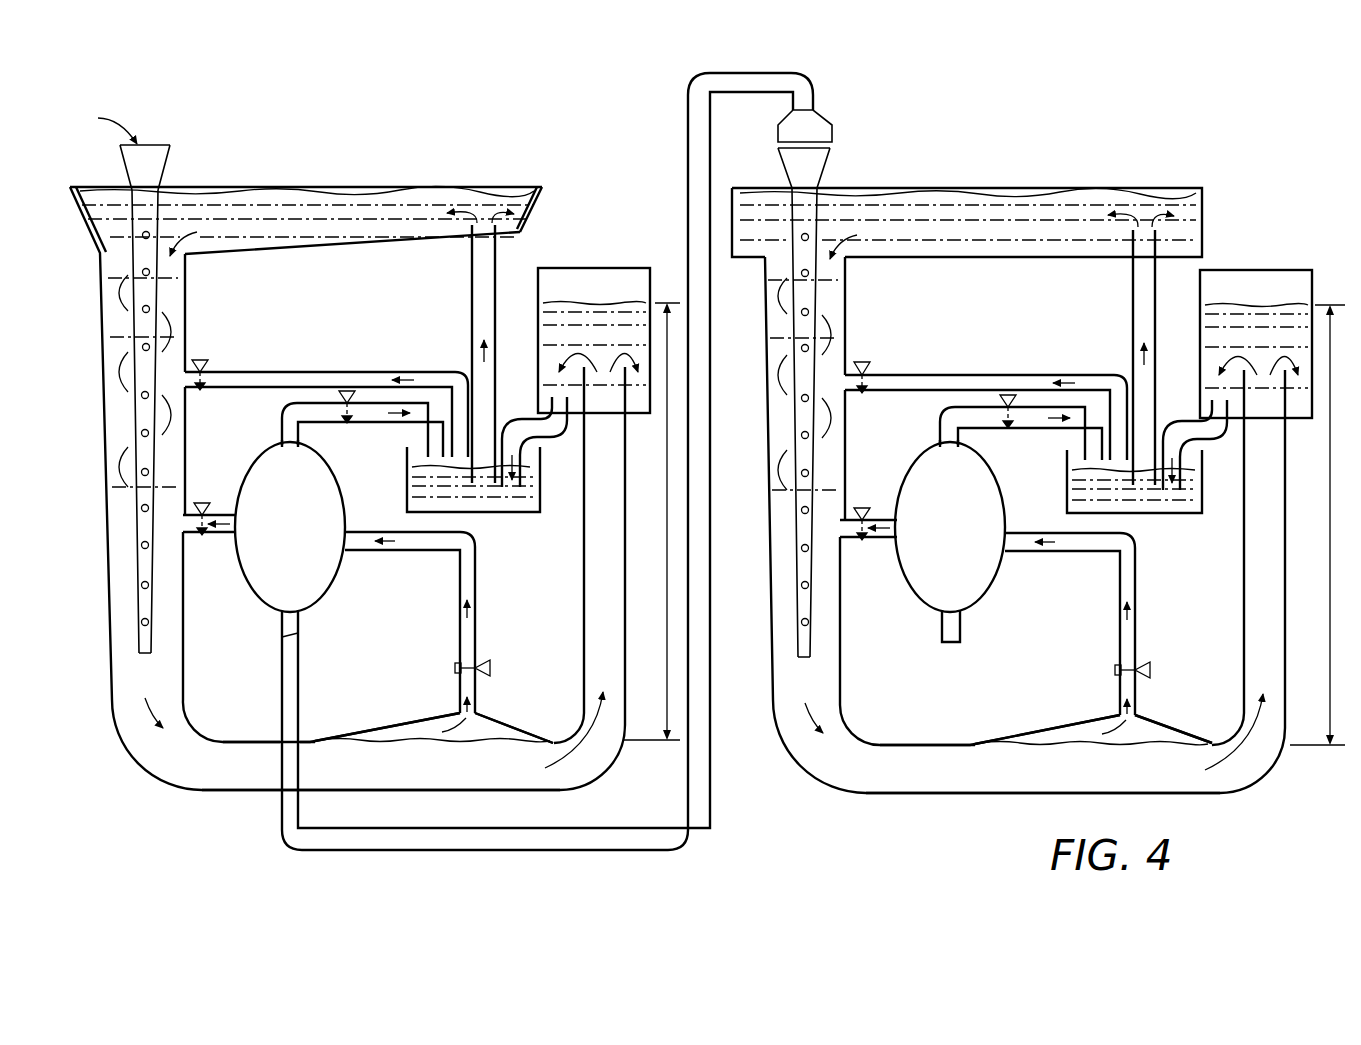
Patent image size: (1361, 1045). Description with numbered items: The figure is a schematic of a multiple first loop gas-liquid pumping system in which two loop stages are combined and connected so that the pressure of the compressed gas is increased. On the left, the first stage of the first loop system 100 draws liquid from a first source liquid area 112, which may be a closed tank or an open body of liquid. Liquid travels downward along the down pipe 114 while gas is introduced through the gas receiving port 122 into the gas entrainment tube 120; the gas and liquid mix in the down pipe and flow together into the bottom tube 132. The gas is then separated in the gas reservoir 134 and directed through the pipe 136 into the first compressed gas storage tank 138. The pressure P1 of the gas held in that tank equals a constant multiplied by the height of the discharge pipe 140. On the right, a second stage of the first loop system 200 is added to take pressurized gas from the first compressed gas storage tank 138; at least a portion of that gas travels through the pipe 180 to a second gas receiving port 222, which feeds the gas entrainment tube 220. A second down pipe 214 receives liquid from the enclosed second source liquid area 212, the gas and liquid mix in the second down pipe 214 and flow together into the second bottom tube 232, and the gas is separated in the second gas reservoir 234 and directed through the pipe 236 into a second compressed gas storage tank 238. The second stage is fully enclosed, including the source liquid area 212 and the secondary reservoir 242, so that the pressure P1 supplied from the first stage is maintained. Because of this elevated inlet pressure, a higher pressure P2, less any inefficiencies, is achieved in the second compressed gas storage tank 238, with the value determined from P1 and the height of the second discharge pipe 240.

The first stage of first loop system 100 is at (472, 150).
The first source liquid area 112 is at (308, 203).
The down pipe 114 is at (110, 473).
The gas entrainment tube 120 is at (134, 521).
The gas receiving port 122 is at (172, 152).
The bottom tube 132 is at (337, 778).
The gas reservoir 134 is at (505, 743).
The pipe 136 is at (458, 632).
The first compressed gas storage tank 138 is at (313, 575).
The discharge pipe 140 is at (580, 553).
The pipe 180 is at (500, 852).
The second stage of first loop system 200 is at (1115, 152).
The second source liquid area 212 is at (998, 205).
The second down pipe 214 is at (765, 363).
The gas entrainment tube 220 is at (797, 498).
The second gas receiving port 222 is at (822, 165).
The second bottom tube 232 is at (1032, 778).
The second gas reservoir 234 is at (1165, 745).
The pipe 236 is at (1118, 645).
The second compressed gas storage tank 238 is at (977, 578).
The second discharge pipe 240 is at (1237, 563).
The secondary reservoir 242 is at (1272, 270).
The pressure in first compressed gas storage tank P1 is at (262, 577).
The pressure in second compressed gas storage tank P2 is at (920, 577).